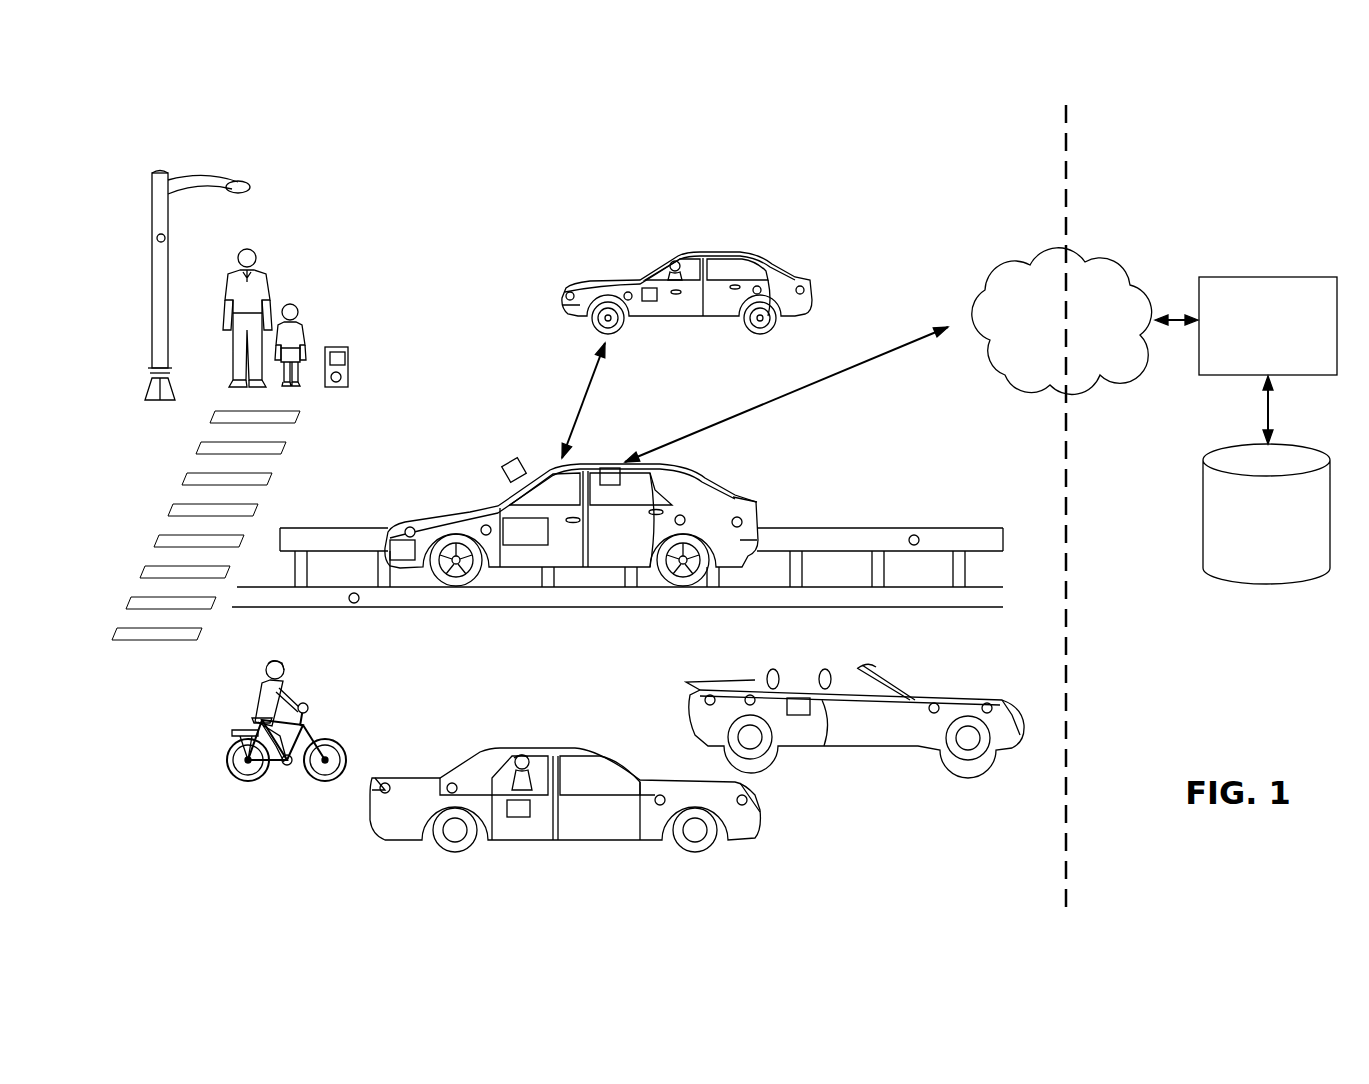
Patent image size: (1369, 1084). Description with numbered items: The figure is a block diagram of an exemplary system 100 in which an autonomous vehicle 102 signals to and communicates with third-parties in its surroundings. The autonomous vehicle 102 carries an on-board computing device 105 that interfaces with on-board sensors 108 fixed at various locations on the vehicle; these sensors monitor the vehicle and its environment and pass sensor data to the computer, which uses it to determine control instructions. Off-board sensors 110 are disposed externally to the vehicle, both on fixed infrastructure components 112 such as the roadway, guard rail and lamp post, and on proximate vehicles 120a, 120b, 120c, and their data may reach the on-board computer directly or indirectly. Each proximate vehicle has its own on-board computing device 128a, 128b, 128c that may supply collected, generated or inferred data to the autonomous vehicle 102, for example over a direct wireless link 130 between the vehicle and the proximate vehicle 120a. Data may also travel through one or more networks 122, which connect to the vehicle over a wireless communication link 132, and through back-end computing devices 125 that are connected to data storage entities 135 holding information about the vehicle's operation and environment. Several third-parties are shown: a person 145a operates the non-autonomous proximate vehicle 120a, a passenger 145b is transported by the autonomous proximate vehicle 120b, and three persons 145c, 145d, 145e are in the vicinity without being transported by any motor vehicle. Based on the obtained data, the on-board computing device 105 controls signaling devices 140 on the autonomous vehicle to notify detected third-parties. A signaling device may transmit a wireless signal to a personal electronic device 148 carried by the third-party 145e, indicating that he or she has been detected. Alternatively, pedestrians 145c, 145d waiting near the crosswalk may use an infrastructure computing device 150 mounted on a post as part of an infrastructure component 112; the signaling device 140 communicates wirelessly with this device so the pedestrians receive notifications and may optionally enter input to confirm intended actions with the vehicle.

The system 100 is at (837, 124).
The autonomous vehicle 102 is at (418, 570).
The on-board computing device 105 is at (525, 531).
The on-board sensors 108 is at (409, 527).
The off-board sensors 110 is at (156, 238).
The infrastructure components 112 is at (150, 181).
The proximate vehicle 120a is at (790, 322).
The proximate vehicle 120b is at (645, 838).
The proximate vehicle 120c is at (1007, 752).
The network 122 is at (1078, 360).
The back-end computing device 125 is at (1298, 277).
The on-board computing device of proximate vehicle 128a is at (650, 303).
The on-board computing device of proximate vehicle 128b is at (520, 818).
The on-board computing device of proximate vehicle 128c is at (800, 716).
The direct wireless link 130 is at (583, 392).
The wireless communication link 132 is at (855, 371).
The data storage entities 135 is at (1308, 446).
The signaling devices 140 is at (392, 542).
The third-party 145a is at (677, 261).
The third-party passenger 145b is at (524, 755).
The third-party 145c is at (262, 275).
The third-party 145d is at (300, 327).
The third-party 145e is at (262, 676).
The wireless electronic device 148 is at (309, 706).
The infrastructure computing device 150 is at (347, 356).